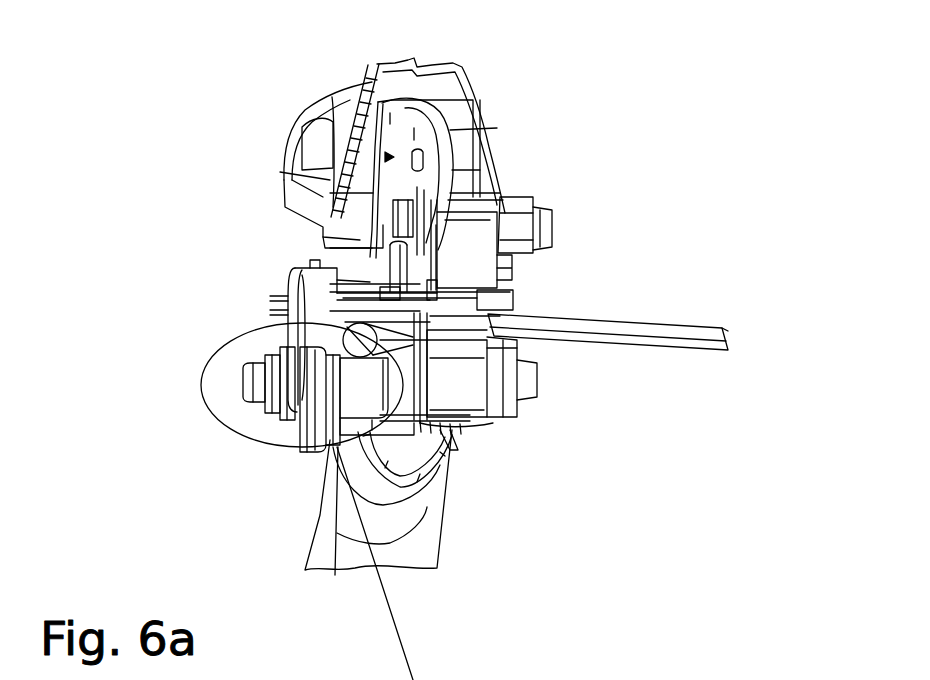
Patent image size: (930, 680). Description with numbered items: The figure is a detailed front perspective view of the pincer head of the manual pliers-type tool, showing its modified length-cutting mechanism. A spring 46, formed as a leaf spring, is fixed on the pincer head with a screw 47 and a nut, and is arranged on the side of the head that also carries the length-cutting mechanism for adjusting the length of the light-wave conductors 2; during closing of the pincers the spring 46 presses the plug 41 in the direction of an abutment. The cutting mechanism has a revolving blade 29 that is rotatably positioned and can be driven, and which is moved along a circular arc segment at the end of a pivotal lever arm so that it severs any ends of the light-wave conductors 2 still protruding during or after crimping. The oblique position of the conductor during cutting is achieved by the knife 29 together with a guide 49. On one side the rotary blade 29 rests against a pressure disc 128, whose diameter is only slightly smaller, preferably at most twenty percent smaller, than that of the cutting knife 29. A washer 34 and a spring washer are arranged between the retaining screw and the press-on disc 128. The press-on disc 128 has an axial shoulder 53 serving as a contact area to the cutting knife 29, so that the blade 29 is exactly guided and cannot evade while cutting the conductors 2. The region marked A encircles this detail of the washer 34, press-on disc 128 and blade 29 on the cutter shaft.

The spring 46 is at (384, 156).
The screw 47 is at (393, 213).
The guide 49 is at (305, 274).
The light-wave conductors 2 is at (268, 295).
The washer 34 is at (293, 370).
The detail region A is at (291, 385).
The pressure disc 128 is at (305, 415).
The revolving blade 29 is at (317, 445).
The plug 41 is at (490, 300).
The axial shoulder 53 is at (535, 679).